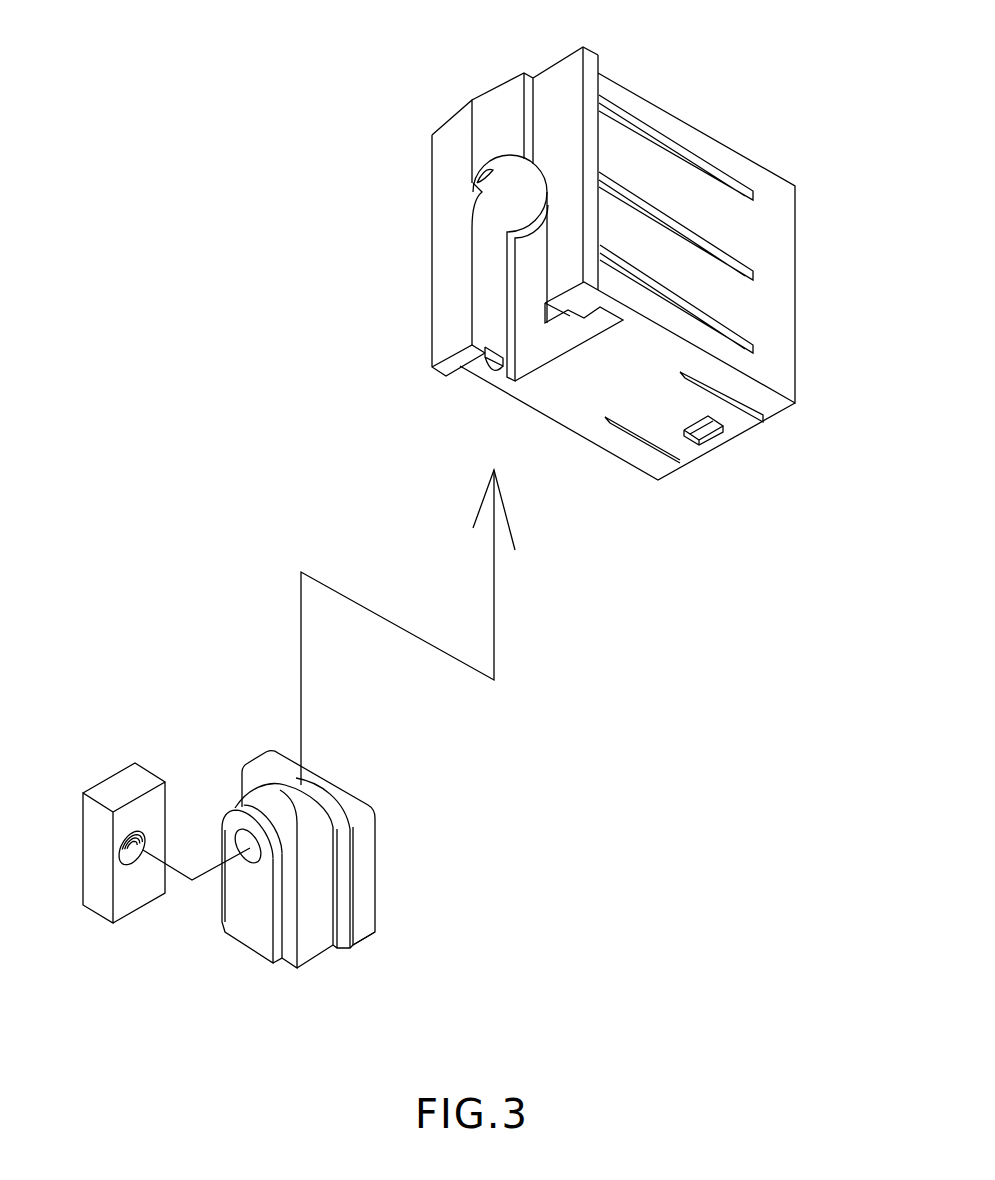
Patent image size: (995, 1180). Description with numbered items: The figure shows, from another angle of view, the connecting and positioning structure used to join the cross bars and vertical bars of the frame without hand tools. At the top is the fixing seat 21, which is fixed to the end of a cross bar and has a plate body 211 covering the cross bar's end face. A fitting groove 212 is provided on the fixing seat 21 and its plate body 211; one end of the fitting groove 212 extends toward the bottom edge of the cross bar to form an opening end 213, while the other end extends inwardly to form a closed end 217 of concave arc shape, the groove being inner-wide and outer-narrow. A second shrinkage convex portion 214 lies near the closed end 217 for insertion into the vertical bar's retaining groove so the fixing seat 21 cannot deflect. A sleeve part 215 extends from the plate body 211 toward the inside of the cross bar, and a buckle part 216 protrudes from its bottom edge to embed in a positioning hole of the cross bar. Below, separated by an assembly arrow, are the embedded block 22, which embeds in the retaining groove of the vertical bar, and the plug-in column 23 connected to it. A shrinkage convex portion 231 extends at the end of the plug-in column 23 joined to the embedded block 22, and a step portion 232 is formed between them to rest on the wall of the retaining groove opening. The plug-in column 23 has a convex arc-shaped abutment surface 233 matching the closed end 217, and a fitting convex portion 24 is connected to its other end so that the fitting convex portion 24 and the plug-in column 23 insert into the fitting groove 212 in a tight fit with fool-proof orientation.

The fixing seat 21 is at (421, 218).
The plate body 211 is at (450, 157).
The fitting groove 212 is at (497, 287).
The opening end 213 is at (484, 370).
The second shrinkage convex portion 214 is at (497, 108).
The sleeve part 215 is at (683, 142).
The buckle part 216 is at (684, 437).
The closed end 217 is at (473, 183).
The embedded block 22 is at (107, 792).
The plug-in column 23 is at (478, 752).
The shrinkage convex portion 231 is at (252, 917).
The step portion 232 is at (290, 880).
The abutment surface 233 is at (285, 805).
The fitting convex portion 24 is at (280, 762).